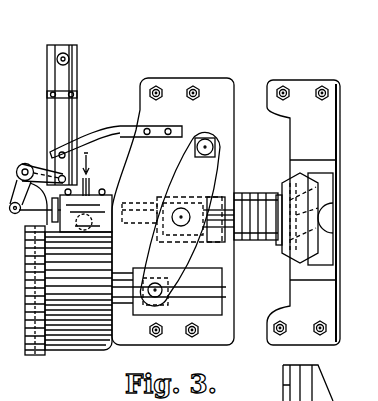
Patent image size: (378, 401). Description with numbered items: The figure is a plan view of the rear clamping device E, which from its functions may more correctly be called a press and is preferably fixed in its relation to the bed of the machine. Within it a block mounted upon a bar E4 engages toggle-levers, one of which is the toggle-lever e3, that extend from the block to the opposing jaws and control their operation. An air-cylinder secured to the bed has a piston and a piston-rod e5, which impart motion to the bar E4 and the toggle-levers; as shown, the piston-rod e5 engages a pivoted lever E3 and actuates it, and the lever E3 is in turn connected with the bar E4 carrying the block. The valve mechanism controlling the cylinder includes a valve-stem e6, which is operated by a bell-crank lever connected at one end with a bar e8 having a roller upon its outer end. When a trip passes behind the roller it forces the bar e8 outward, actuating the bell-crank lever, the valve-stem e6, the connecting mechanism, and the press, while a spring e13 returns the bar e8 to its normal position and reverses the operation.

The valve-stem e6 is at (69, 58).
The bar e8 is at (62, 122).
The spring e13 is at (121, 127).
The toggle-lever e3 is at (22, 192).
The piston-rod e5 is at (199, 288).
The pivoted lever E3 is at (178, 231).
The bar E4 is at (218, 195).
The rear clamping device E is at (66, 347).